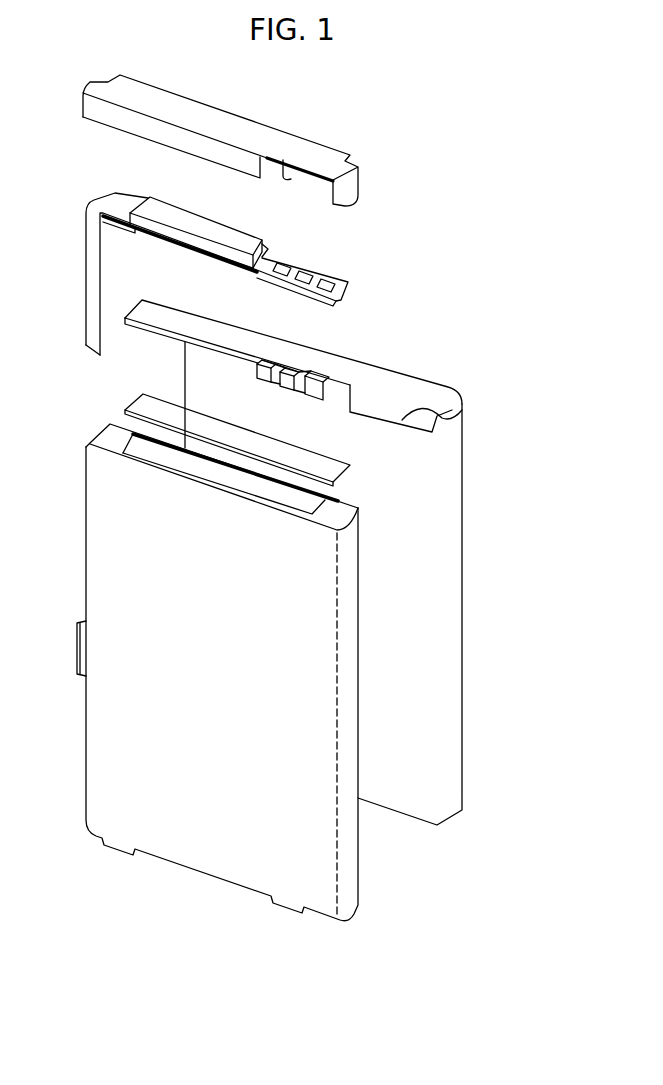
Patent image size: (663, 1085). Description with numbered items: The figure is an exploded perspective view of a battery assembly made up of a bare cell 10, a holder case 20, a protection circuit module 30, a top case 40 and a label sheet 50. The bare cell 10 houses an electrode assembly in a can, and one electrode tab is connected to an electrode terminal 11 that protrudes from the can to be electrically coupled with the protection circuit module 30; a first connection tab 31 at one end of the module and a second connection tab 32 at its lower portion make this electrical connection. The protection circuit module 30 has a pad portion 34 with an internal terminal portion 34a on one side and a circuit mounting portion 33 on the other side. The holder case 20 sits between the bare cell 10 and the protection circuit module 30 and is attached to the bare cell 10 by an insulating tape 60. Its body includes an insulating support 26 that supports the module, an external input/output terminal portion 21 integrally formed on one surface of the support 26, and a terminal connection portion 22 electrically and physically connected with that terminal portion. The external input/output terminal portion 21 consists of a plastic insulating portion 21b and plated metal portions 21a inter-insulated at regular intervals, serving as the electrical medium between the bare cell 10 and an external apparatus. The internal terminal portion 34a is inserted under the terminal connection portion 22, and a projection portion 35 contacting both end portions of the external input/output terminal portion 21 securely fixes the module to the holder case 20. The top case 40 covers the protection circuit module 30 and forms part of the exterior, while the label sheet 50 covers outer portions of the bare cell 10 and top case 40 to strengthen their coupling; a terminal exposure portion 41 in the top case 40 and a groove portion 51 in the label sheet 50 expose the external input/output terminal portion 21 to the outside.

The bare cell 10 is at (233, 672).
The electrode terminal 11 is at (80, 651).
The holder case 20 is at (315, 365).
The external input/output terminal portion 21 is at (189, 369).
The metal portion 21a is at (272, 385).
The insulating portion 21b is at (258, 368).
The terminal connection portion 22 is at (244, 354).
The support 26 is at (164, 320).
The protection circuit module 30 is at (268, 265).
The first connection tab 31 is at (93, 272).
The second connection tab 32 is at (113, 227).
The circuit mounting portion 33 is at (190, 217).
The pad portion 34 is at (267, 247).
The internal terminal portion 34a is at (300, 269).
The projection portion 35 is at (276, 260).
The top case 40 is at (361, 181).
The terminal exposure portion 41 is at (283, 160).
The label sheet 50 is at (452, 638).
The groove portion 51 is at (460, 422).
The insulating tape 60 is at (347, 475).